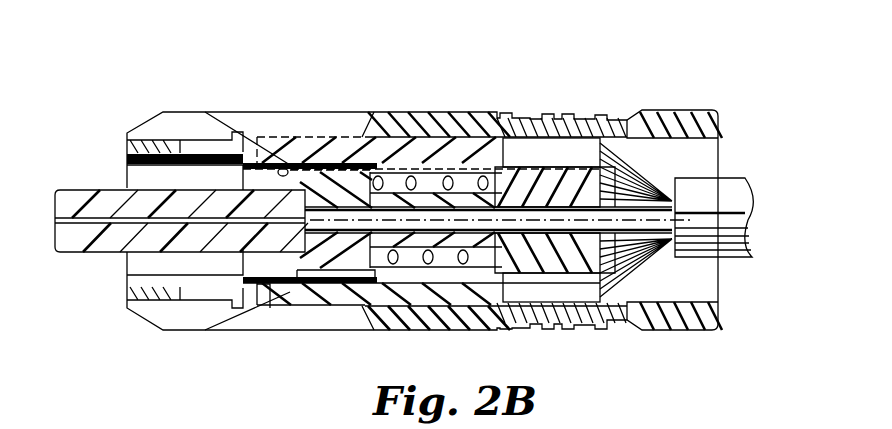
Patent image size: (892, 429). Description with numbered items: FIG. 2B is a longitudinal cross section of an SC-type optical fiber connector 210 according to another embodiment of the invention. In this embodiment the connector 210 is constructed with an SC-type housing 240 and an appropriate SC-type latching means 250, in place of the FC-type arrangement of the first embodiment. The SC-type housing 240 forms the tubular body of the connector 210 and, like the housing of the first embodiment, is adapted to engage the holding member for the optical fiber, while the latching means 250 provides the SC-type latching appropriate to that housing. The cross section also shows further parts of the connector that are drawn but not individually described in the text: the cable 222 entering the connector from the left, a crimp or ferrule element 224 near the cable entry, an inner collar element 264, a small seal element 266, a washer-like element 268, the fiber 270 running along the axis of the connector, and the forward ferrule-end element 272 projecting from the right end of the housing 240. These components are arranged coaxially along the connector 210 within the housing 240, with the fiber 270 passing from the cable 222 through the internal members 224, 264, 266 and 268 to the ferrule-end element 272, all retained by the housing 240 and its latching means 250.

The SC-type connector 210 is at (493, 64).
The fiber optic cable 222 is at (68, 192).
The crimp sleeve 224 is at (272, 290).
The SC-type housing 240 is at (572, 150).
The SC-type latching means 250 is at (401, 115).
The retaining collar 264 is at (341, 160).
The O-ring seal 266 is at (283, 168).
The washer 268 is at (327, 279).
The optical fiber 270 is at (55, 223).
The ferrule 272 is at (750, 190).